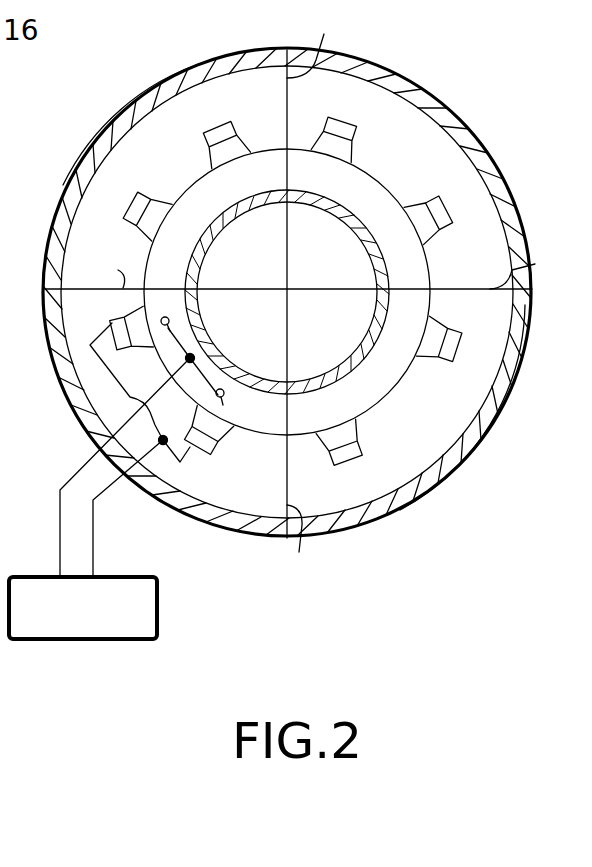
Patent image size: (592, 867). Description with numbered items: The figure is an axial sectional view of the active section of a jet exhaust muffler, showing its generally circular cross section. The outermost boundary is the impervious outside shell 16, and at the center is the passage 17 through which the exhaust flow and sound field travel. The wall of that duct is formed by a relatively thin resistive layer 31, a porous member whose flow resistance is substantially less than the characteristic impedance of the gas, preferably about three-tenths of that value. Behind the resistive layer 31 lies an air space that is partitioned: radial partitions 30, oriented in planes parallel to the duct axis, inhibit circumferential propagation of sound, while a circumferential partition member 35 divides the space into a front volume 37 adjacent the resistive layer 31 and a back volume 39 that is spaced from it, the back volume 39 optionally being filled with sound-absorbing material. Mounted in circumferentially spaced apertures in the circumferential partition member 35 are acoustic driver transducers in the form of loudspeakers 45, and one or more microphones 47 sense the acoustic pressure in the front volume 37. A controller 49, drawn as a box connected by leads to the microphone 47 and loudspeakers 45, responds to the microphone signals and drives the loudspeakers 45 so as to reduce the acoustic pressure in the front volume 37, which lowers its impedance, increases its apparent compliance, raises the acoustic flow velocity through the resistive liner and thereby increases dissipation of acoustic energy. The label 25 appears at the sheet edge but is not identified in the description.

The outside shell 16 is at (475, 148).
The passage 17 is at (322, 305).
The motor 25 is at (18, 113).
The radial partitions 30 is at (315, 297).
The resistive layer 31 is at (225, 228).
The circumferential partition member 35 is at (400, 384).
The front volume 37 is at (334, 187).
The back volume 39 is at (410, 164).
The loudspeakers 45 is at (150, 199).
The microphone 47 is at (190, 358).
The controller 49 is at (98, 621).